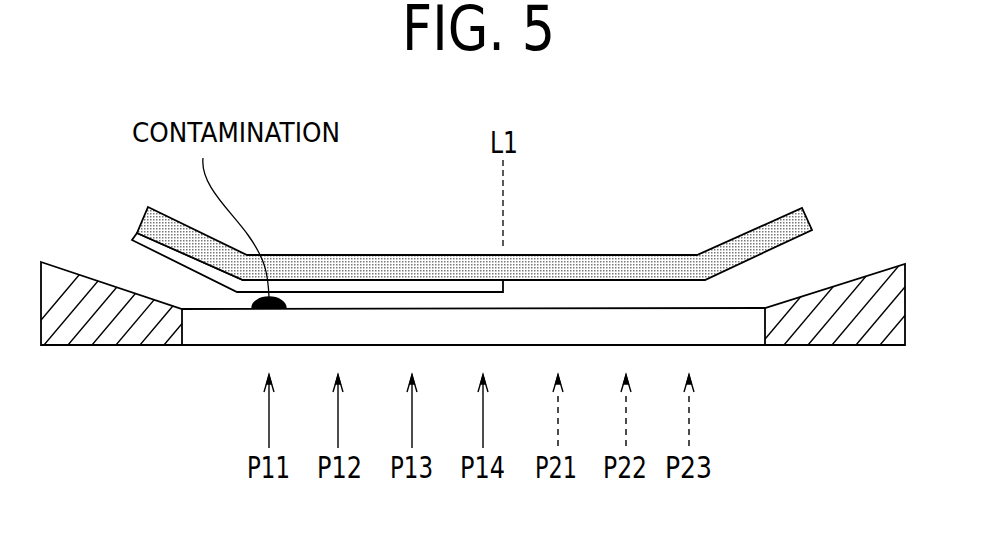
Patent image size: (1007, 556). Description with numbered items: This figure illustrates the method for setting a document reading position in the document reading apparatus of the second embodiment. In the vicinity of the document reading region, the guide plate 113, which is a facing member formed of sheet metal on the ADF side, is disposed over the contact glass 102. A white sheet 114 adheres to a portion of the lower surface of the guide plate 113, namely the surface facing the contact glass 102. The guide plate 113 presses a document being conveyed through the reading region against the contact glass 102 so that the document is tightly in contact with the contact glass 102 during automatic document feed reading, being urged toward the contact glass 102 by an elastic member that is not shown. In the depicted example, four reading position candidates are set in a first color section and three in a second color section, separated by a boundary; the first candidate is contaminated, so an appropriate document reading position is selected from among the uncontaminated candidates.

The contact glass 102 is at (670, 325).
The guide plate 113 is at (593, 268).
The white sheet 114 is at (397, 288).